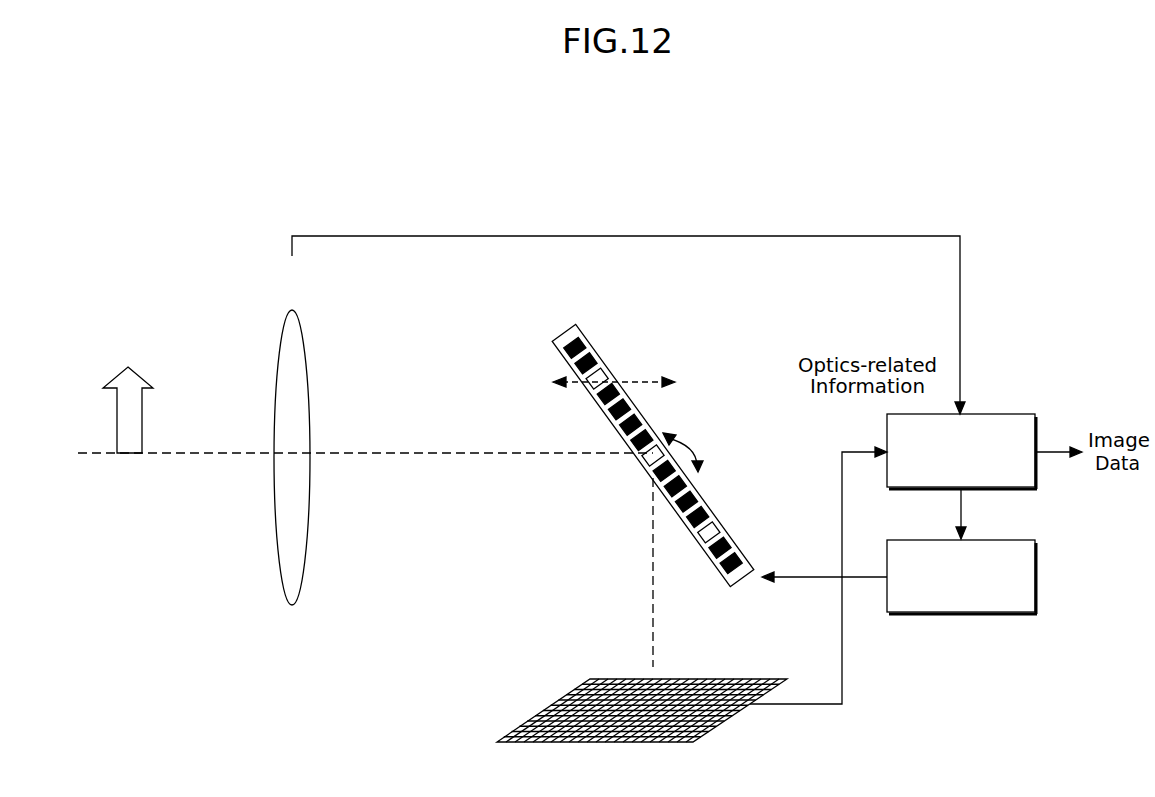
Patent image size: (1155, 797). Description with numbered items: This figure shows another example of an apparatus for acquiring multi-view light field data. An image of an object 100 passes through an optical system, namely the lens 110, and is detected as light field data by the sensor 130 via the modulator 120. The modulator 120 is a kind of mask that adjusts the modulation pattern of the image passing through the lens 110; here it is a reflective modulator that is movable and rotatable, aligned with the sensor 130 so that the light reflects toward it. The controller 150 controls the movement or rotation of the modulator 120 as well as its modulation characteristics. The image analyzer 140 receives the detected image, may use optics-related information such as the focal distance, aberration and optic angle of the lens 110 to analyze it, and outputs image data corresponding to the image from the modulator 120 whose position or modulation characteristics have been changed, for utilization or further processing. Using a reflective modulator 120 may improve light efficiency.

The object 100 is at (142, 337).
The lens 110 is at (295, 305).
The modulator 120 is at (588, 298).
The sensor 130 is at (765, 653).
The image analyzer 140 is at (997, 413).
The controller 150 is at (997, 539).